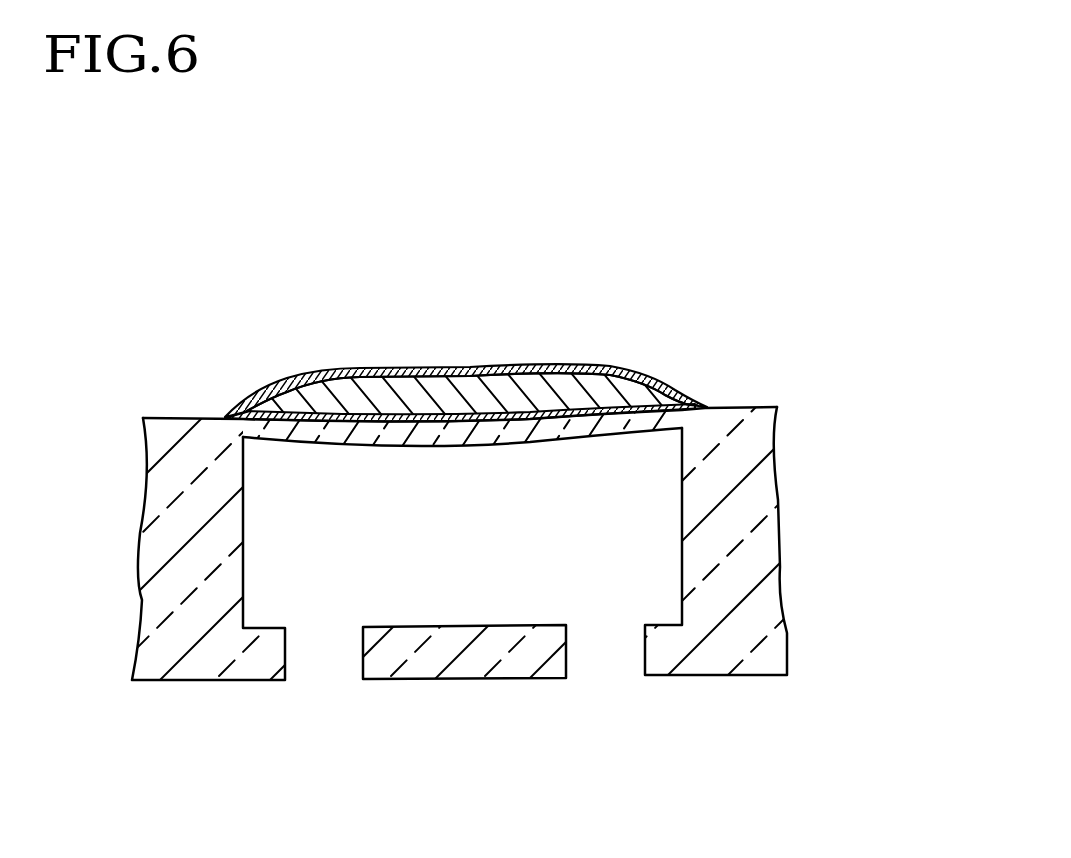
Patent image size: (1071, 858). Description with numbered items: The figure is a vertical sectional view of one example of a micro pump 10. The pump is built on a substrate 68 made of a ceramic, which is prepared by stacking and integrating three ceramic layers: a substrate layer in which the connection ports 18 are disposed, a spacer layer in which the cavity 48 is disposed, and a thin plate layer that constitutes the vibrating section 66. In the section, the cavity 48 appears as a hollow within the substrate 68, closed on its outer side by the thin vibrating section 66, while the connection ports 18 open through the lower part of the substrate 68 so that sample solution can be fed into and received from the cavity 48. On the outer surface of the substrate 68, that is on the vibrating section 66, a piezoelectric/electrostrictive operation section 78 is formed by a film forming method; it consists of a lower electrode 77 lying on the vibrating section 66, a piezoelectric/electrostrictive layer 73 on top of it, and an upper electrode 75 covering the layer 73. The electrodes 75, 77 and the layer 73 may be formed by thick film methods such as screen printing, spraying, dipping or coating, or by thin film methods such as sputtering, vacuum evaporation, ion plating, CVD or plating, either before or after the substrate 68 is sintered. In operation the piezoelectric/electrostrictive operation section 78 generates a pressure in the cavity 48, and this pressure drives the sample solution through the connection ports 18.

The micro pump 10 is at (824, 336).
The connection ports 18 is at (599, 684).
The cavity 48 is at (476, 547).
The vibrating section 66 is at (600, 440).
The substrate 68 is at (760, 503).
The piezoelectric/electrostrictive layer 73 is at (347, 392).
The upper electrode 75 is at (529, 368).
The lower electrode 77 is at (357, 420).
The piezoelectric/electrostrictive operation section 78 is at (233, 348).